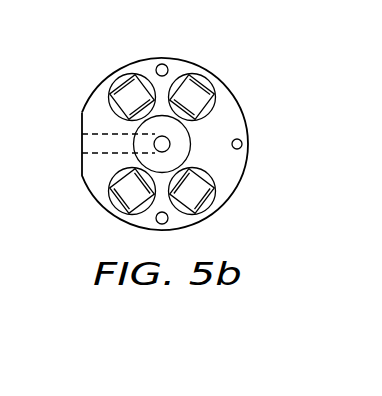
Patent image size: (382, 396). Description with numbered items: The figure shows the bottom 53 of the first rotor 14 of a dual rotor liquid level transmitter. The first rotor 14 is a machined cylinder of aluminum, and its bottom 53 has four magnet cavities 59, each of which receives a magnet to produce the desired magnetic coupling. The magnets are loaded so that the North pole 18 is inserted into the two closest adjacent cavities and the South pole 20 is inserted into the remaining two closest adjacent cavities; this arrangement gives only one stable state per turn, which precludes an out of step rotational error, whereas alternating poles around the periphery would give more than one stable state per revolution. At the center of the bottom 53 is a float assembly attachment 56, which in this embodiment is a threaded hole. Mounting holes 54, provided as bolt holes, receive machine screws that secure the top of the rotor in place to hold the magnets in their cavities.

The first rotor 14 is at (143, 60).
The North pole 18 is at (117, 80).
The South pole 20 is at (110, 212).
The bottom 53 is at (241, 107).
The mounting holes 54 is at (242, 144).
The float assembly attachment 56 is at (82, 142).
The magnet cavities 59 is at (193, 62).